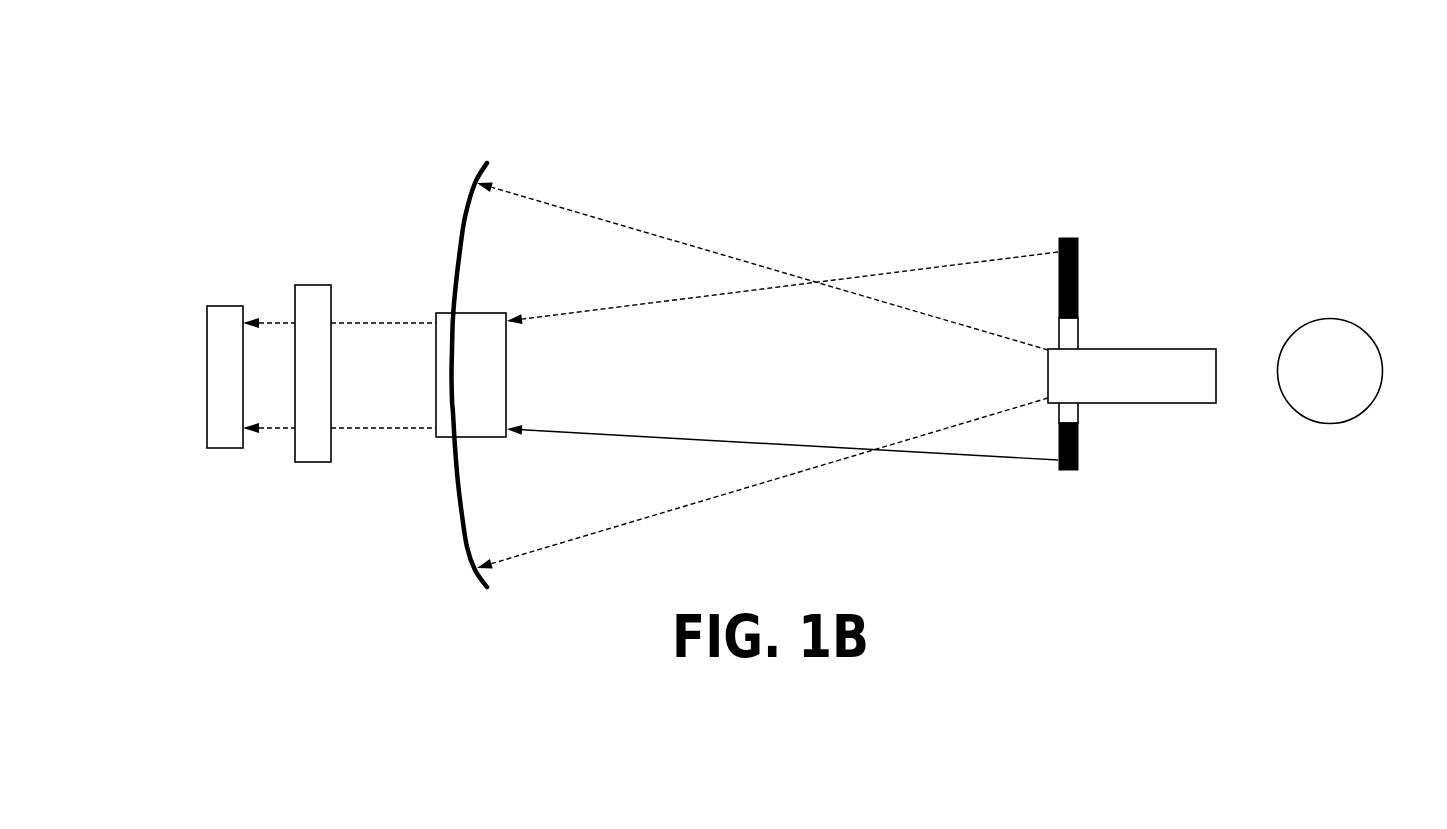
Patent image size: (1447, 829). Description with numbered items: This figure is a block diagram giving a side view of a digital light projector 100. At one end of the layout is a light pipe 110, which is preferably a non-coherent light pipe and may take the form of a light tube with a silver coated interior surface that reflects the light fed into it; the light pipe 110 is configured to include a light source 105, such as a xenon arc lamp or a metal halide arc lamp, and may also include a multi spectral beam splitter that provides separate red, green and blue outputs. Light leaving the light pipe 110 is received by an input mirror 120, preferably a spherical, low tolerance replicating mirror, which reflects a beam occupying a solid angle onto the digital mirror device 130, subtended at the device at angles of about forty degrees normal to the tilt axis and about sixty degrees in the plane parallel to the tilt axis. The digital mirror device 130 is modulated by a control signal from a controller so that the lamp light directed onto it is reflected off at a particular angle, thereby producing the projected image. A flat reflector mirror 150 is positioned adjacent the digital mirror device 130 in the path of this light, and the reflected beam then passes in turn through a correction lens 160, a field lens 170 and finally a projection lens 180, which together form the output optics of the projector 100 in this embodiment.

The digital light projector 100 is at (207, 80).
The light source 105 is at (1332, 318).
The light pipe 110 is at (1172, 358).
The input mirror 120 is at (463, 272).
The digital mirror device 130 is at (1078, 326).
The flat reflector mirror 150 is at (1077, 238).
The correction lens 160 is at (435, 373).
The field lens 170 is at (317, 285).
The projection lens 180 is at (207, 342).